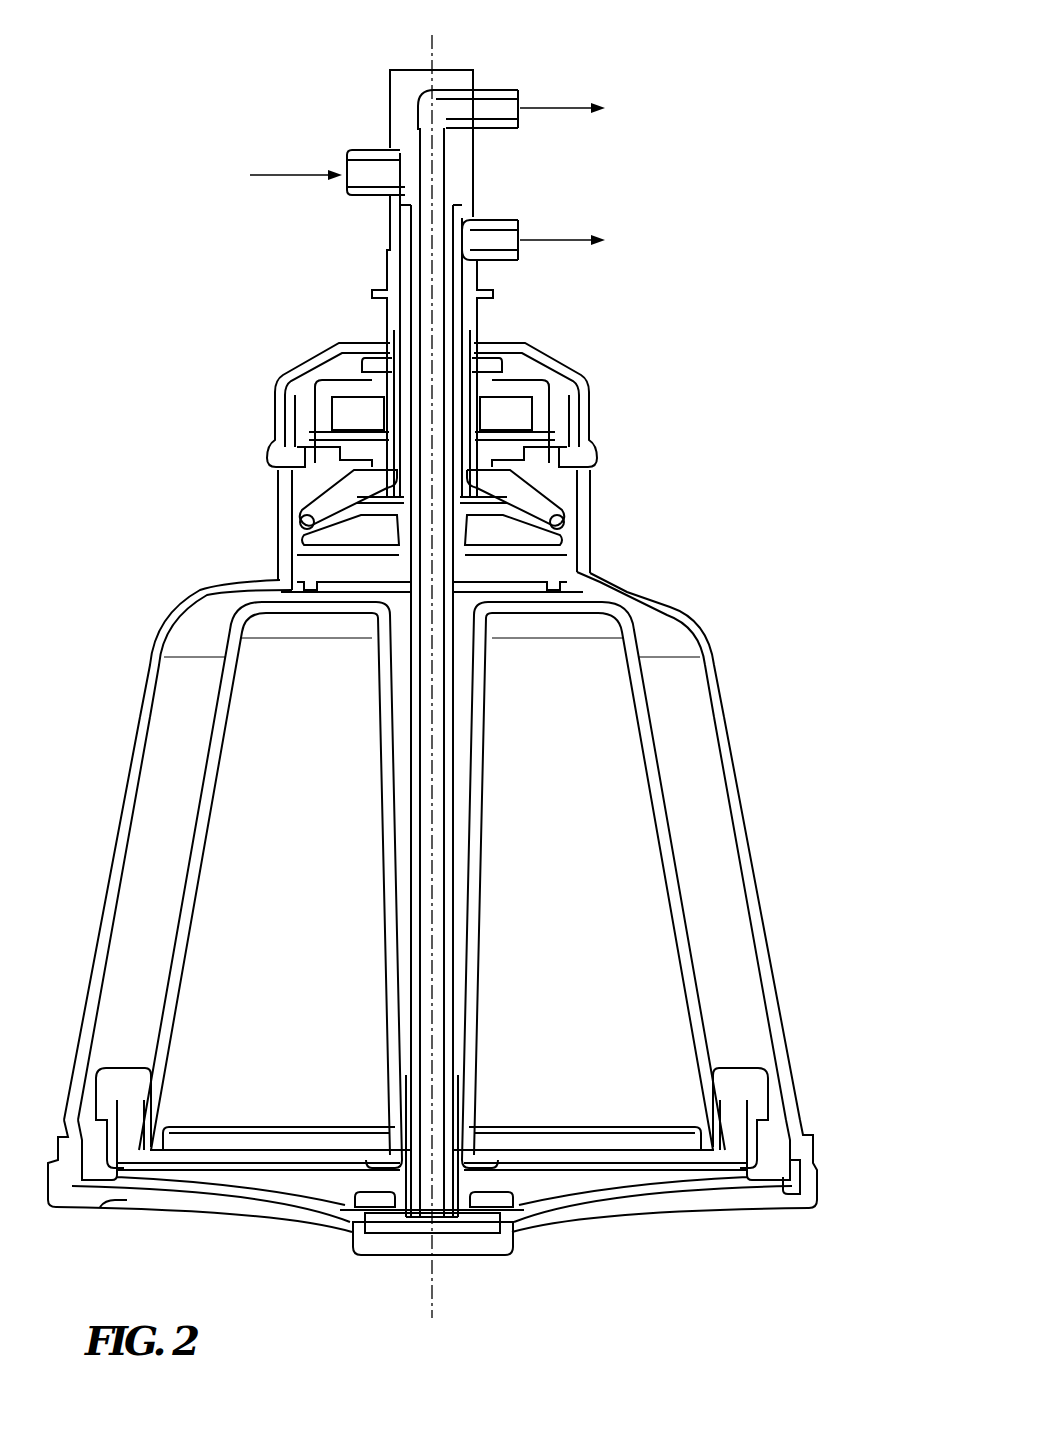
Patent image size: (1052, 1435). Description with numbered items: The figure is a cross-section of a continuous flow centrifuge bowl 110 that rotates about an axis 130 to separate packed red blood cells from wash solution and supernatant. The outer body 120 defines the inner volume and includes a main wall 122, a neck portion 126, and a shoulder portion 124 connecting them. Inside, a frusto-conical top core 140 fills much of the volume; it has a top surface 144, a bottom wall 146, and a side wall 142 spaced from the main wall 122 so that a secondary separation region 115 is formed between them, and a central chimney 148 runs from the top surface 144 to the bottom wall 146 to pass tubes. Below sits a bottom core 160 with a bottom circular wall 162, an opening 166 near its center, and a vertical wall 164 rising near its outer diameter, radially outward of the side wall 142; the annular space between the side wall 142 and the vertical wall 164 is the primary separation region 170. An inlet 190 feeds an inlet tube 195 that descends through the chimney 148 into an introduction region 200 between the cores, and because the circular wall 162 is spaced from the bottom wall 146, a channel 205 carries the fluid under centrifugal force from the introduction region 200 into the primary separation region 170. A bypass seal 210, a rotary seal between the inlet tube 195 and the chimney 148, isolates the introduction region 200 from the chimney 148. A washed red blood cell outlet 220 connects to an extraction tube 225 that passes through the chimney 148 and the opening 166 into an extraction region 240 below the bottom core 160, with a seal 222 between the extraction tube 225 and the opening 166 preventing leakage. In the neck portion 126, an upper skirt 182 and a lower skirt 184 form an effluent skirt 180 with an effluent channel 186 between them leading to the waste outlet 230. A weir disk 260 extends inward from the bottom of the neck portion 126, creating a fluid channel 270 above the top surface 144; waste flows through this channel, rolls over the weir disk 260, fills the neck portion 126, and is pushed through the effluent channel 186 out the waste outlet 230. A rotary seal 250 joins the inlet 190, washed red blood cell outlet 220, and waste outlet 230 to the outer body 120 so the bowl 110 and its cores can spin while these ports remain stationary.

The centrifuge bowl 110 is at (243, 88).
The secondary separation region 115 is at (160, 780).
The outer body 120 is at (128, 700).
The main wall 122 is at (765, 935).
The shoulder portion 124 is at (700, 627).
The neck portion 126 is at (590, 563).
The axis 130 is at (430, 46).
The top core 140 is at (692, 866).
The side wall 142 is at (665, 800).
The top surface 144 is at (250, 592).
The bottom wall 146 is at (660, 1157).
The chimney 148 is at (483, 746).
The bottom core 160 is at (772, 1108).
The bottom circular wall 162 is at (628, 1172).
The vertical wall 164 is at (782, 1185).
The opening 166 is at (393, 1217).
The primary separation region 170 is at (740, 1110).
The effluent skirt 180 is at (530, 500).
The upper skirt 182 is at (555, 530).
The lower skirt 184 is at (570, 548).
The effluent channel 186 is at (575, 535).
The inlet 190 is at (360, 150).
The inlet tube 195 is at (417, 622).
The introduction region 200 is at (410, 1185).
The channel 205 is at (565, 1165).
The bypass seal 210 is at (390, 1135).
The washed red blood cell outlet 220 is at (500, 90).
The seal 222 is at (450, 1223).
The extraction tube 225 is at (427, 1217).
The waste outlet 230 is at (502, 215).
The washed red blood cell extraction region 240 is at (482, 1227).
The rotary seal 250 is at (275, 400).
The weir disk 260 is at (398, 606).
The fluid channel 270 is at (282, 587).